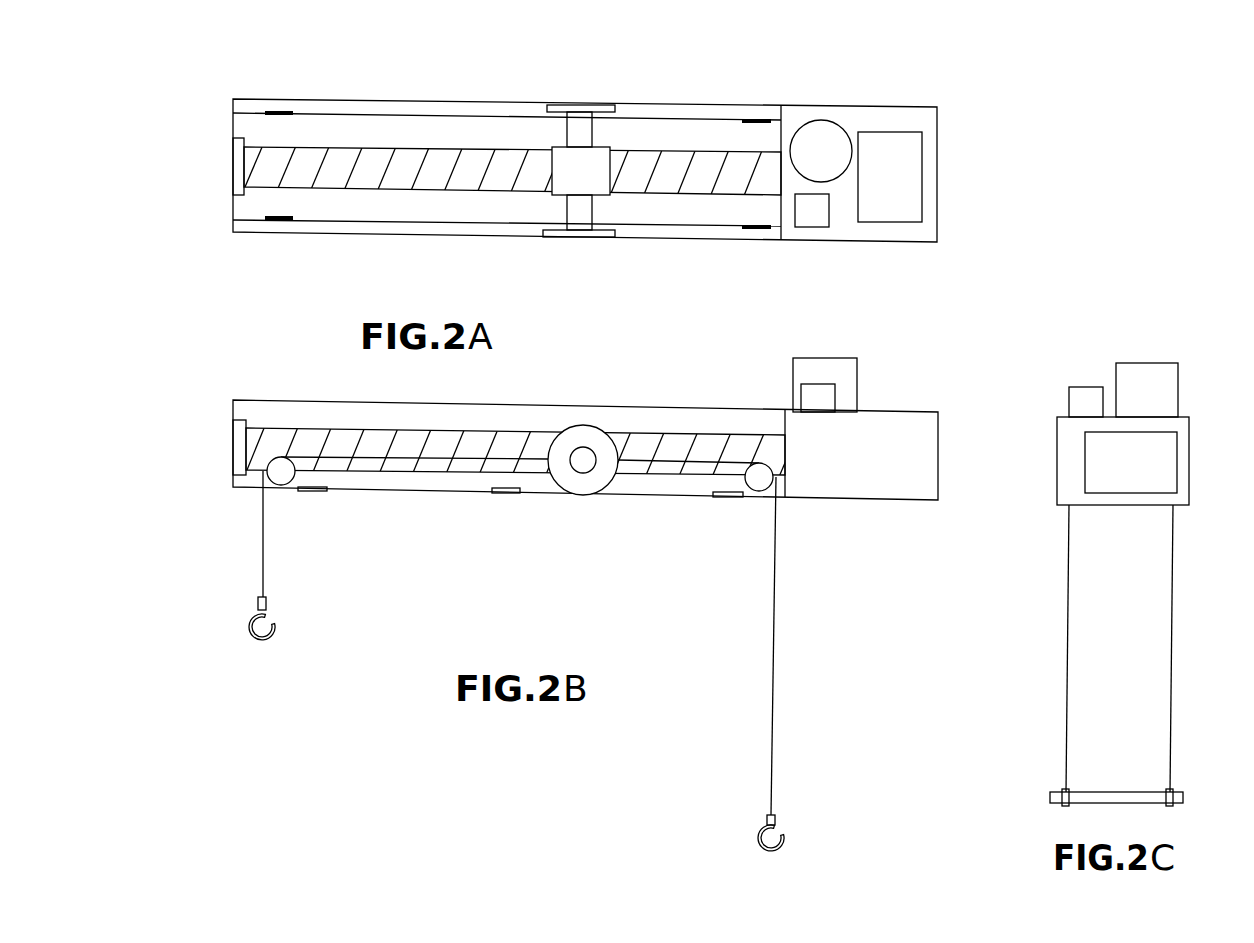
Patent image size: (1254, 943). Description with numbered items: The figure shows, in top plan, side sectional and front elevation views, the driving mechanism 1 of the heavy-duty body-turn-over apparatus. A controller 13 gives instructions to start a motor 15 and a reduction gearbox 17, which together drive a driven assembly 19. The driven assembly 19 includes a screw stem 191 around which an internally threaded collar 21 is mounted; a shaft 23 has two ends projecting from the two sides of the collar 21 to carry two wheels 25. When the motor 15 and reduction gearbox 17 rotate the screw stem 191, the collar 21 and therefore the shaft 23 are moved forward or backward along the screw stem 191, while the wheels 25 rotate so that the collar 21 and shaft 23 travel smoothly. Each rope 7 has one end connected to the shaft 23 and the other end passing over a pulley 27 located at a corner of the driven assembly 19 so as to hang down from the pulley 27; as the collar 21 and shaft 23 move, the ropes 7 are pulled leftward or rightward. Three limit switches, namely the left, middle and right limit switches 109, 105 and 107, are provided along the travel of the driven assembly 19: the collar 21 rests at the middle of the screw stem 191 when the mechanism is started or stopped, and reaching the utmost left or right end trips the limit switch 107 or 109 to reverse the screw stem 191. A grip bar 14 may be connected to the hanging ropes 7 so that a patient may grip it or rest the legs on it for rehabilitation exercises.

In FIG. 2A, the driving mechanism 1 is at (232, 233).
In FIG. 2A, the rope 7 is at (400, 230).
In FIG. 2B, the rope 7 is at (775, 670).
In FIG. 2C, the controller 13 is at (1085, 398).
In FIG. 2C, the grip bar 14 is at (1127, 797).
In FIG. 2B, the motor 15 is at (838, 372).
In FIG. 2C, the motor 15 is at (1148, 378).
In FIG. 2A, the reduction gearbox 17 is at (796, 117).
In FIG. 2A, the driven assembly 19 is at (507, 120).
In FIG. 2A, the screw stem 191 is at (707, 158).
In FIG. 2A, the internally threaded collar 21 is at (588, 173).
In FIG. 2A, the shaft 23 is at (588, 142).
In FIG. 2A, the wheel 25 is at (580, 238).
In FIG. 2A, the pulley 27 is at (282, 112).
In FIG. 2B, the middle limit switch 105 is at (505, 493).
In FIG. 2B, the right limit switch 107 is at (308, 491).
In FIG. 2B, the left limit switch 109 is at (722, 497).